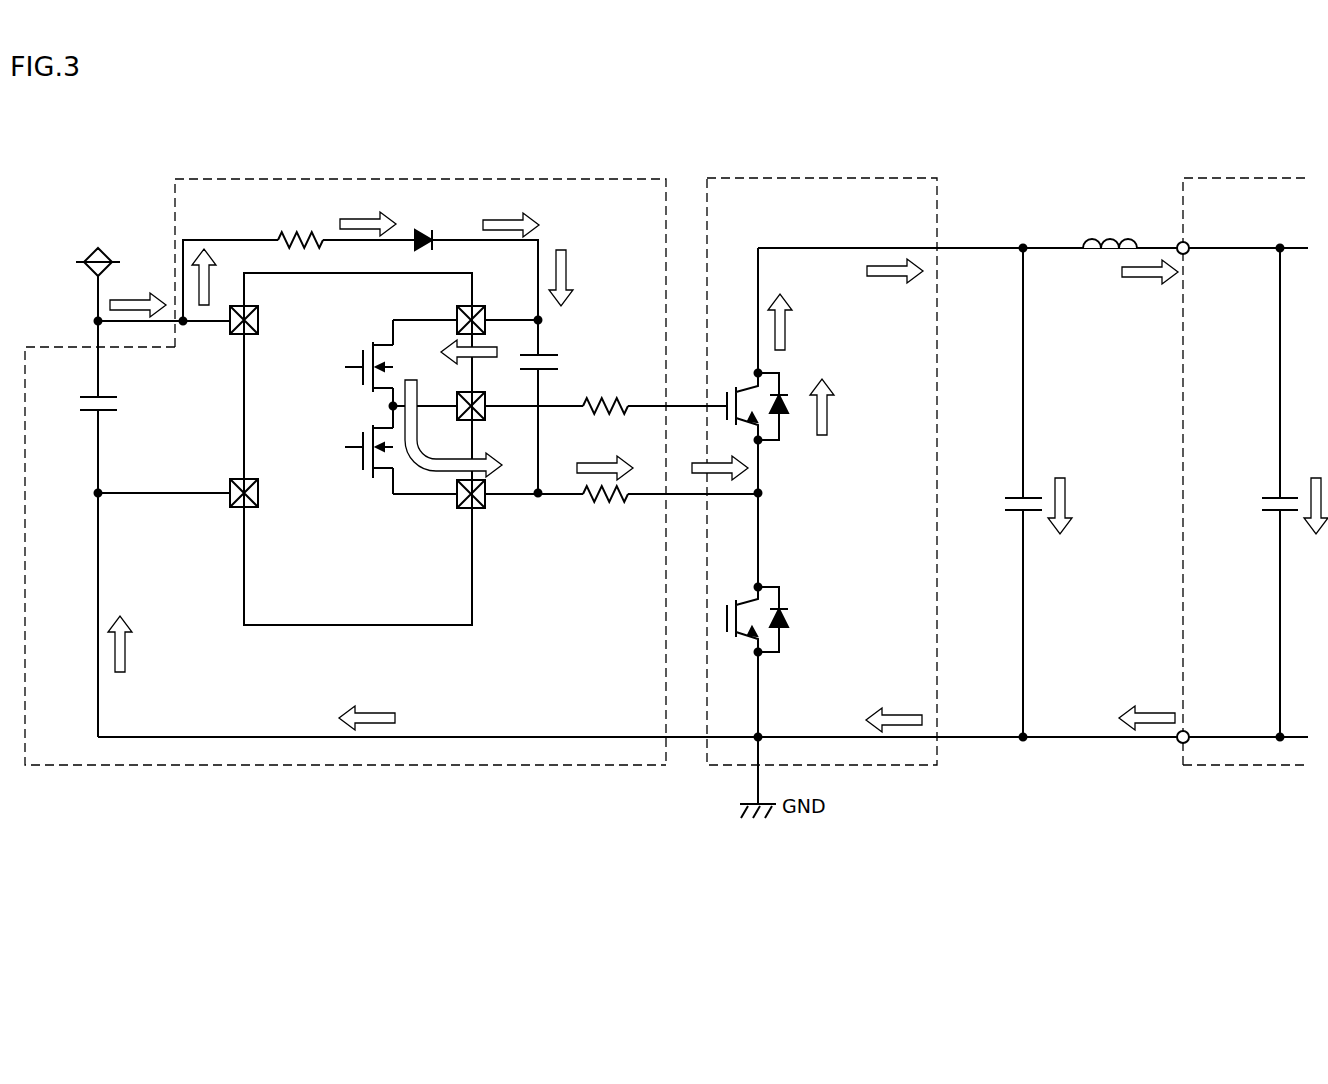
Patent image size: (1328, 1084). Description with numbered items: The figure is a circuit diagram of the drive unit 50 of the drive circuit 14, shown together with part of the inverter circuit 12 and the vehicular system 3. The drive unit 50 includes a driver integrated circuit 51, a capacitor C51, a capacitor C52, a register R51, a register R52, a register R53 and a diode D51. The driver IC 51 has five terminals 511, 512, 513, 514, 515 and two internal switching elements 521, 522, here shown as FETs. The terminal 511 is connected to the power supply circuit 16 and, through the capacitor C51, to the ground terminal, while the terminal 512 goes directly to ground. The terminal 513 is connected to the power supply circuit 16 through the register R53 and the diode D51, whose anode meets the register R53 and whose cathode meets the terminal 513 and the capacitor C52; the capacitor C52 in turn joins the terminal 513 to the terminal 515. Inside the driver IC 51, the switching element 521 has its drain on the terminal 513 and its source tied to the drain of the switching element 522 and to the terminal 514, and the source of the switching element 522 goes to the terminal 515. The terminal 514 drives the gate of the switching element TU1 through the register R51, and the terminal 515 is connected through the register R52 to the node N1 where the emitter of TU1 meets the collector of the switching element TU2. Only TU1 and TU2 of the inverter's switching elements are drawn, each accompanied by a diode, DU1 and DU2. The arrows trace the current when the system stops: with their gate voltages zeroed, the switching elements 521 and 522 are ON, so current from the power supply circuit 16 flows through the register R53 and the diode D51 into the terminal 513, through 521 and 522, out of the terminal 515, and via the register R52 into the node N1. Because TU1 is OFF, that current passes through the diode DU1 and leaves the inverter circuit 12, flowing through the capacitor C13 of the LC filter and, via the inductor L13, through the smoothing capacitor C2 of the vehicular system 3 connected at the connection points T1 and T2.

The drive circuit 14 is at (166, 151).
The drive unit 50 is at (628, 178).
The inverter circuit 12 is at (893, 178).
The vehicular system 3 is at (1210, 178).
The power supply circuit 16 is at (88, 270).
The driver integrated circuit 51 is at (415, 625).
The terminal 511 is at (260, 322).
The terminal 512 is at (258, 507).
The terminal 513 is at (485, 306).
The terminal 514 is at (484, 420).
The terminal 515 is at (484, 508).
The switching element 521 is at (362, 392).
The switching element 522 is at (362, 475).
The capacitor C51 is at (88, 396).
The capacitor C52 is at (550, 360).
The register R51 is at (606, 400).
The register R52 is at (605, 500).
The register R53 is at (298, 236).
The diode D51 is at (422, 232).
The switching element TU1 is at (750, 387).
The switching element TU2 is at (750, 602).
The diode DU1 is at (784, 418).
The freewheel diode DU2 is at (784, 632).
The node N1 is at (765, 495).
The capacitor C13 is at (1008, 497).
The inductor L13 is at (1110, 238).
The capacitor C2 is at (1265, 497).
The connection point T1 is at (1189, 240).
The connection point T2 is at (1189, 730).